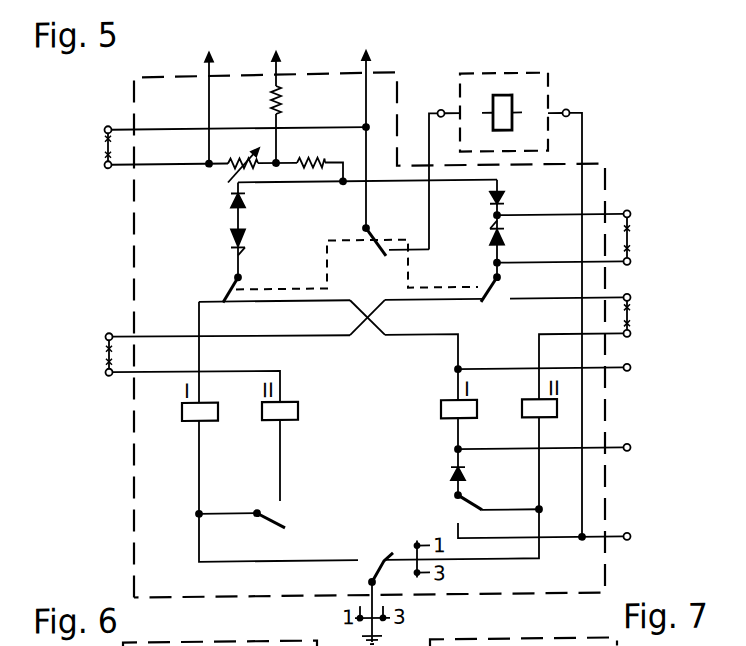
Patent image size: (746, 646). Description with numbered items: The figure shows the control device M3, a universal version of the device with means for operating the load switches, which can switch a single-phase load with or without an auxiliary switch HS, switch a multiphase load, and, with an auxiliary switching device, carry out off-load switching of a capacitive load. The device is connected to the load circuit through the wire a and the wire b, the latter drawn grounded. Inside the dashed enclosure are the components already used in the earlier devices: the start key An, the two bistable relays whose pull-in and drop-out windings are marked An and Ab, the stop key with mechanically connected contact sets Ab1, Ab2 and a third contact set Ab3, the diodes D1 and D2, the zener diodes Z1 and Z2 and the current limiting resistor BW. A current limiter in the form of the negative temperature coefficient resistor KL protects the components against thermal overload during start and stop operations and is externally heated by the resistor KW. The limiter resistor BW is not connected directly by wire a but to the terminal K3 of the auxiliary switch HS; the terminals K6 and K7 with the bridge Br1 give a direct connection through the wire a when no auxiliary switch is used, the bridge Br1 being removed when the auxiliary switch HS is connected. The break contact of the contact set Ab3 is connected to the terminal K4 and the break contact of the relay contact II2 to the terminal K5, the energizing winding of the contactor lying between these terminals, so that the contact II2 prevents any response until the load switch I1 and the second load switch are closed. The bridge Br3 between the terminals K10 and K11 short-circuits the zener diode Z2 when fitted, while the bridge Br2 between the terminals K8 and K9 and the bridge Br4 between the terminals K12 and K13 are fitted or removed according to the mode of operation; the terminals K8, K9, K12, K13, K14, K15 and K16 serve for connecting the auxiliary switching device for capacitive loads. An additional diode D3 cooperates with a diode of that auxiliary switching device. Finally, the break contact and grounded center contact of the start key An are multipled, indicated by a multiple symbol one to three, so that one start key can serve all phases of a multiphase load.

The control device M3 is at (606, 188).
The terminal K3 is at (207, 96).
The wire b is at (277, 95).
The wire a is at (366, 126).
The resistor KW is at (293, 101).
The negative temperature coefficient resistor KL is at (241, 158).
The current limiting resistor BW is at (311, 150).
The terminal K6 is at (221, 122).
The terminal K7 is at (287, 171).
The bridge Br1 is at (100, 144).
The diode D1 is at (226, 205).
The zener diode Z1 is at (226, 252).
The stop key contact set Ab1 is at (240, 303).
The stop key contact set Ab2 is at (499, 302).
The third stop key contact set Ab3 is at (357, 257).
The diode D2 is at (509, 203).
The zener diode Z2 is at (510, 248).
The terminal K4 is at (444, 168).
The terminal K5 is at (565, 311).
The auxiliary switch HS is at (552, 64).
The terminal K10 is at (578, 207).
The terminal K11 is at (578, 263).
The bridge Br3 is at (635, 236).
The terminal K12 is at (586, 294).
The terminal K13 is at (600, 363).
The bridge Br4 is at (635, 316).
The terminal K14 is at (558, 368).
The terminal K15 is at (558, 450).
The terminal K16 is at (560, 536).
The terminal K8 is at (215, 326).
The terminal K9 is at (180, 384).
The bridge Br2 is at (100, 351).
The start key An is at (283, 522).
The relay drop-out winding Ab is at (503, 433).
The load switch I1 is at (252, 474).
The additional diode D3 is at (471, 479).
The relay contact II2 is at (483, 509).